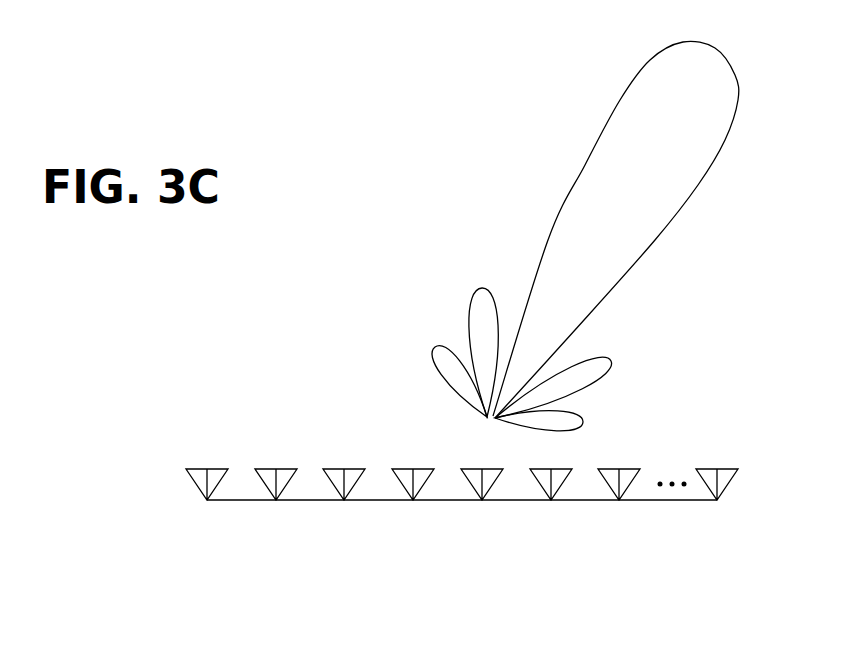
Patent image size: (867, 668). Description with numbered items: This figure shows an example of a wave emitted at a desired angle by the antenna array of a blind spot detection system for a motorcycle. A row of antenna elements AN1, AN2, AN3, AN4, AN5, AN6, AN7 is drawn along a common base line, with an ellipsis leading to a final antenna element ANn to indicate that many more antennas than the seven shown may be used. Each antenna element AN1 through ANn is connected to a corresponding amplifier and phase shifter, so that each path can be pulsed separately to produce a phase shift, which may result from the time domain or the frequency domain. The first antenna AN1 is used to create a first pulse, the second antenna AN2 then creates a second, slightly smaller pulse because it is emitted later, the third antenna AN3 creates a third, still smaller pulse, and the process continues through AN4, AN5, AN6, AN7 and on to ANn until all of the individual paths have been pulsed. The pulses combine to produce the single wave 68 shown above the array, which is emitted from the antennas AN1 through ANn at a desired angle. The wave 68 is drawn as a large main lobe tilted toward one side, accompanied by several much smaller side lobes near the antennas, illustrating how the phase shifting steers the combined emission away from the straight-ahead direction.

The single wave 68 is at (537, 213).
The antenna element AN1 is at (200, 467).
The antenna element AN2 is at (272, 468).
The antenna element AN3 is at (337, 468).
The antenna element AN4 is at (405, 468).
The antenna element AN5 is at (496, 479).
The antenna element AN6 is at (566, 479).
The antenna element AN7 is at (613, 469).
The antenna element ANn is at (708, 469).